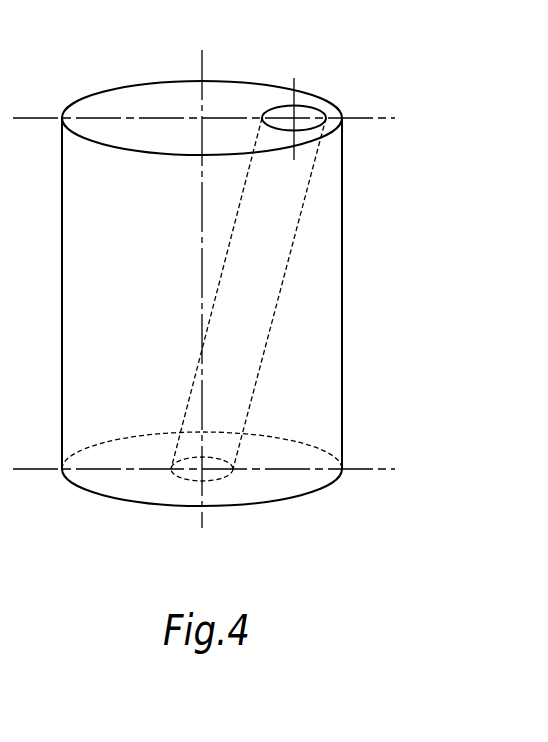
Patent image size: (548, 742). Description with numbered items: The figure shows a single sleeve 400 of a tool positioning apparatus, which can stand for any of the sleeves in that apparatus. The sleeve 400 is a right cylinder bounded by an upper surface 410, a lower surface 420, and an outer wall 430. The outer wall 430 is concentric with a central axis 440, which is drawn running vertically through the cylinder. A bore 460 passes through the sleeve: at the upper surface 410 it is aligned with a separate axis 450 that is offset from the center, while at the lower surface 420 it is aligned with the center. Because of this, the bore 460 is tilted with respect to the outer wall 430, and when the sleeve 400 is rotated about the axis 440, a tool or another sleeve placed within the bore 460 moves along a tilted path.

The sleeve 400 is at (403, 23).
The upper surface 410 is at (87, 102).
The lower surface 420 is at (273, 505).
The outer wall 430 is at (343, 272).
The axis 440 is at (205, 60).
The axis 450 is at (297, 80).
The bore 460 is at (315, 162).